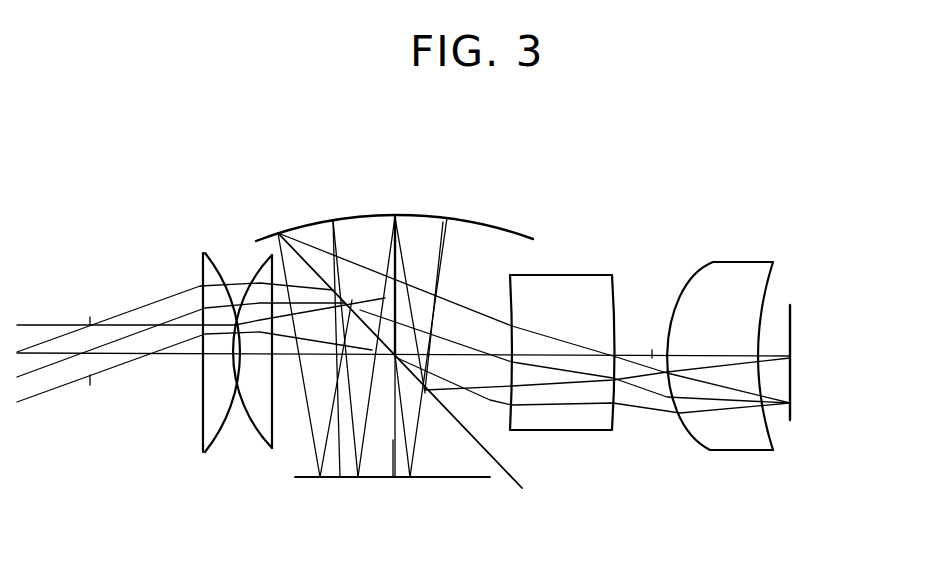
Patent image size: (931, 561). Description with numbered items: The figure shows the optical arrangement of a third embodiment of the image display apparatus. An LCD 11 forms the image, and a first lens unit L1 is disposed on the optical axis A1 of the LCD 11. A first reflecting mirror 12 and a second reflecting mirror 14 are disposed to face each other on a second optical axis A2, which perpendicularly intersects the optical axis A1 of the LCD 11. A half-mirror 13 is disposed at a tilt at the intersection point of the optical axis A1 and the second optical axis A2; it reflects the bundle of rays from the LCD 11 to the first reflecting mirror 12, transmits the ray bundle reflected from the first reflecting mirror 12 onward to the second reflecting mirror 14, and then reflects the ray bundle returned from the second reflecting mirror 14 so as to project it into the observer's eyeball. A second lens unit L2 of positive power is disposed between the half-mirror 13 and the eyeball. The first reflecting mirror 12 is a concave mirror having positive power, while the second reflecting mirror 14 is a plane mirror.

The LCD 11 is at (792, 306).
The first reflecting mirror 12 is at (521, 229).
The half-mirror 13 is at (513, 480).
The second reflecting mirror 14 is at (475, 479).
The optical axis of the LCD A1 is at (652, 356).
The second optical axis A2 is at (395, 448).
The first lens unit L1 is at (783, 456).
The second lens unit L2 is at (275, 458).